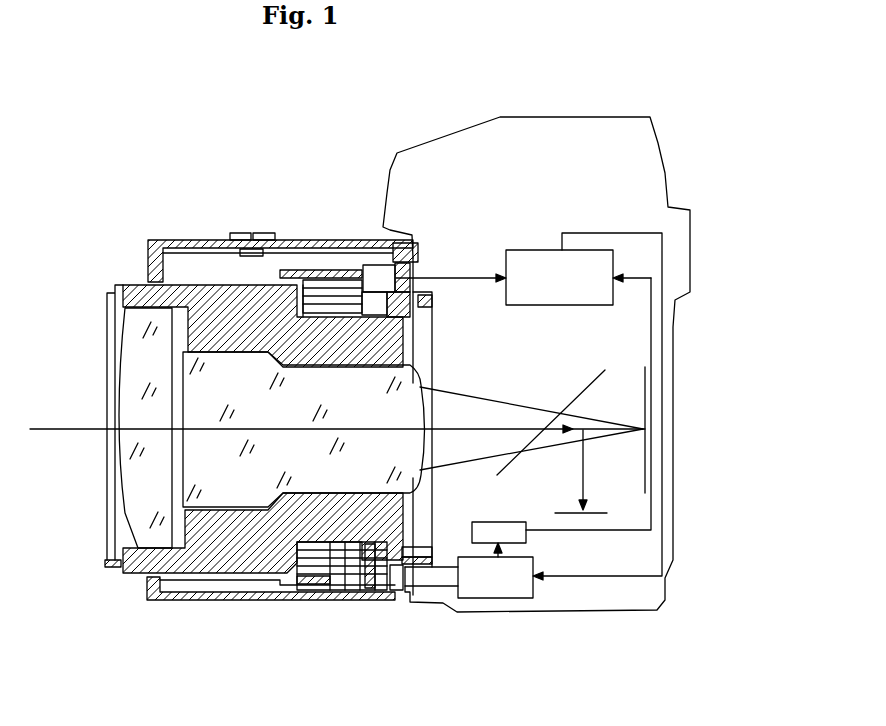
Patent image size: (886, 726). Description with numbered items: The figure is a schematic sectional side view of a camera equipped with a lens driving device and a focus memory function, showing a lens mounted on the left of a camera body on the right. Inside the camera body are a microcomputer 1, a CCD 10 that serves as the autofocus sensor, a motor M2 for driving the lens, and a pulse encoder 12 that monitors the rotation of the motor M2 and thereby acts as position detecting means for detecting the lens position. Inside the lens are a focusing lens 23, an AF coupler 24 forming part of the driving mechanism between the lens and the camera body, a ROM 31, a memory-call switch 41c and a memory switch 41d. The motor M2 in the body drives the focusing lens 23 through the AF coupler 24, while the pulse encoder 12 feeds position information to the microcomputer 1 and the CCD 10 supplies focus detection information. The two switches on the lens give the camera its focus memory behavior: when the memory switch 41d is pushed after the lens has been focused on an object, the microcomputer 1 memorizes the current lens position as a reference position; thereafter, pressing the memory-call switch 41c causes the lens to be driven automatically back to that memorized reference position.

The microcomputer 1 is at (607, 265).
The CCD 10 is at (600, 513).
The pulse encoder 12 is at (515, 535).
The focusing lens 23 is at (132, 382).
The AF coupler 24 is at (397, 590).
The ROM 31 is at (370, 266).
The memory-call switch 41c is at (237, 232).
The memory switch 41d is at (263, 233).
The motor M2 is at (500, 587).